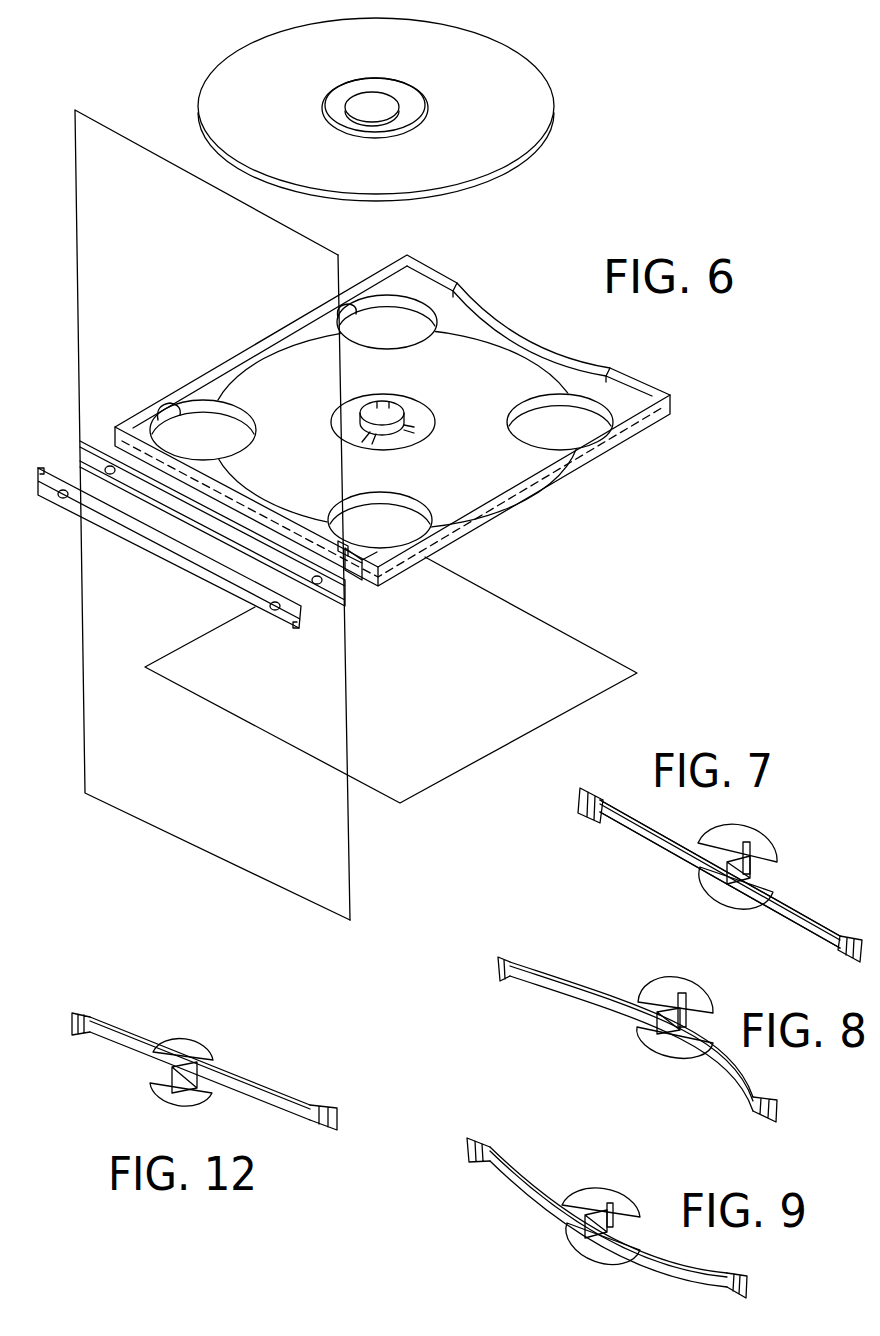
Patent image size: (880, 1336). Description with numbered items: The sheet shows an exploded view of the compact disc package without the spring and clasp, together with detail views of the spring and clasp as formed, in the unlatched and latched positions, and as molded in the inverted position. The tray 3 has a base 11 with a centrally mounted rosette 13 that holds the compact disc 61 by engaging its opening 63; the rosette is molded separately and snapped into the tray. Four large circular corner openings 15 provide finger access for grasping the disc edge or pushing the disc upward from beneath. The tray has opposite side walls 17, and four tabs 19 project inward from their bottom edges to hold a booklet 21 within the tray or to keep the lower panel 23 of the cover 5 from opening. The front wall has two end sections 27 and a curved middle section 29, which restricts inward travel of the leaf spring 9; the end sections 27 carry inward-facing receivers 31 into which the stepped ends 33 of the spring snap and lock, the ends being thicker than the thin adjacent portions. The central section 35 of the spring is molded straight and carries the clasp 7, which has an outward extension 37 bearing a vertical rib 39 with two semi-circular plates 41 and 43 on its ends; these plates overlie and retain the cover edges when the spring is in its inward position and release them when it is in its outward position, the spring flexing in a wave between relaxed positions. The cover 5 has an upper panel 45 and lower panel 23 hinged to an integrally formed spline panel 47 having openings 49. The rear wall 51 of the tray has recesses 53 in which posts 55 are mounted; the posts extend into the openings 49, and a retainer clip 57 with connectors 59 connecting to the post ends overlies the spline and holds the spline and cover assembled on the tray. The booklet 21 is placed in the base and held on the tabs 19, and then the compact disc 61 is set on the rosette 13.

In FIG. 6, the tray 3 is at (532, 509).
In FIG. 6, the cover 5 is at (209, 868).
In FIG. 7, the clasp 7 is at (739, 819).
In FIG. 7, the leaf spring 9 is at (835, 910).
In FIG. 6, the base 11 is at (482, 471).
In FIG. 6, the rosette 13 is at (403, 415).
In FIG. 6, the corner openings 15 is at (588, 404).
In FIG. 6, the side walls 17 is at (287, 323).
In FIG. 6, the tabs 19 is at (349, 316).
In FIG. 6, the booklet 21 is at (509, 747).
In FIG. 6, the lower panel 23 is at (349, 880).
In FIG. 6, the end sections 27 is at (428, 268).
In FIG. 6, the curved middle section 29 is at (590, 369).
In FIG. 6, the receivers 31 is at (618, 368).
In FIG. 7, the stepped ends 33 is at (835, 950).
In FIG. 8, the stepped ends 33 is at (772, 1130).
In FIG. 9, the stepped ends 33 is at (607, 1218).
In FIG. 12, the stepped ends 33 is at (73, 1013).
In FIG. 7, the central section 35 is at (674, 842).
In FIG. 8, the central section 35 is at (725, 1068).
In FIG. 9, the central section 35 is at (694, 1263).
In FIG. 12, the central section 35 is at (140, 1035).
In FIG. 8, the outward extension 37 is at (665, 1000).
In FIG. 9, the outward extension 37 is at (610, 1215).
In FIG. 7, the vertical rib 39 is at (760, 866).
In FIG. 8, the vertical rib 39 is at (668, 1021).
In FIG. 9, the vertical rib 39 is at (596, 1224).
In FIG. 12, the vertical rib 39 is at (173, 1081).
In FIG. 7, the semi-circular plate 41 is at (765, 852).
In FIG. 12, the semi-circular plate 41 is at (208, 1102).
In FIG. 7, the semi-circular plate 43 is at (737, 843).
In FIG. 8, the semi-circular plate 43 is at (675, 1018).
In FIG. 9, the semi-circular plate 43 is at (594, 1260).
In FIG. 12, the semi-circular plate 43 is at (212, 1058).
In FIG. 6, the upper panel 45 is at (311, 238).
In FIG. 6, the spline panel 47 is at (337, 592).
In FIG. 6, the openings 49 is at (318, 592).
In FIG. 6, the rear wall 51 is at (366, 583).
In FIG. 6, the recesses 53 is at (348, 575).
In FIG. 6, the posts 55 is at (389, 537).
In FIG. 6, the retainer clip 57 is at (222, 590).
In FIG. 6, the connectors 59 is at (270, 619).
In FIG. 6, the compact disc 61 is at (509, 252).
In FIG. 6, the opening 63 is at (396, 114).